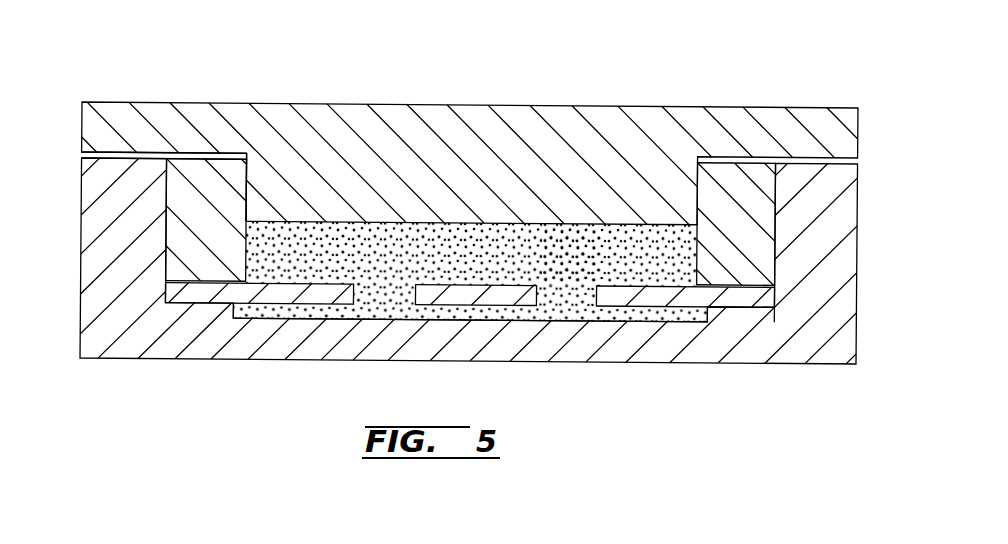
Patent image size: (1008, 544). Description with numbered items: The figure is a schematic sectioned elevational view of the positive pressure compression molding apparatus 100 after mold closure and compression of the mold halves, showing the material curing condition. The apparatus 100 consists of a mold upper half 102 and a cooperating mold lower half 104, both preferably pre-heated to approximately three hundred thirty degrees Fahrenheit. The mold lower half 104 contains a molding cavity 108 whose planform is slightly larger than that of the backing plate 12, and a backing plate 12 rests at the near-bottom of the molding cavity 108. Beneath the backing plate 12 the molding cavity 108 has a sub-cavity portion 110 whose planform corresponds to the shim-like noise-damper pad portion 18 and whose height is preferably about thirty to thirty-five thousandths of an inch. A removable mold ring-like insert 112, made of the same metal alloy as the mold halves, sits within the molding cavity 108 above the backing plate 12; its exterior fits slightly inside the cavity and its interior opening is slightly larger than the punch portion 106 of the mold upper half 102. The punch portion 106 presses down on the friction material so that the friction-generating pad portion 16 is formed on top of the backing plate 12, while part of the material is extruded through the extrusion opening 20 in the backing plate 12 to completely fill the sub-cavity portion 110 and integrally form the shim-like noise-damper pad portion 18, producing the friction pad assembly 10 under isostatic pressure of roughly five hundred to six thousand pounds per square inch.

The positive pressure compression molding apparatus 100 is at (655, 80).
The mold upper half 102 is at (415, 137).
The mold lower half 104 is at (140, 358).
The punch portion 106 is at (250, 157).
The molding cavity 108 is at (181, 156).
The sub-cavity portion 110 is at (478, 318).
The removable mold ring-like insert 112 is at (180, 223).
The disc brake friction pad assembly 10 is at (452, 217).
The backing plate 12 is at (733, 300).
The friction-generating pad portion 16 is at (563, 229).
The shim-like noise-damper pad portion 18 is at (275, 300).
The extrusion opening 20 is at (357, 289).